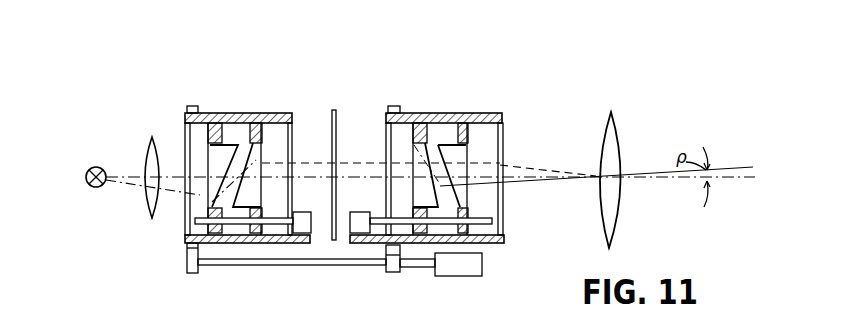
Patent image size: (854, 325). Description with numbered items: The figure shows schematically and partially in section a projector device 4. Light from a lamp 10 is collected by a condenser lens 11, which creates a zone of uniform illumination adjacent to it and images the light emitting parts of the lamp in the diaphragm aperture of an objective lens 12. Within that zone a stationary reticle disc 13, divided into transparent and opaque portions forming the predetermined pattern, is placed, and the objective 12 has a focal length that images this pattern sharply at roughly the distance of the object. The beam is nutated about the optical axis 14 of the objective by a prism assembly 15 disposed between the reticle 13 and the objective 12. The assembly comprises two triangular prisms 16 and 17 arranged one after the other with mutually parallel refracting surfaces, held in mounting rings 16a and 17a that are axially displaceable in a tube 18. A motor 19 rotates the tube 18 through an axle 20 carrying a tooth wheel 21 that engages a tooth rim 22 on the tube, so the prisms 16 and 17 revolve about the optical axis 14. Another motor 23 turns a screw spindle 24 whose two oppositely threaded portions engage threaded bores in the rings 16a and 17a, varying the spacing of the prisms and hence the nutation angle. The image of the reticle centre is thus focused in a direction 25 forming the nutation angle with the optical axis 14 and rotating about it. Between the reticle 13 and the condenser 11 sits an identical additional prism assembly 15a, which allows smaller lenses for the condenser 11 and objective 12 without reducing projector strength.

The projector device 4 is at (132, 119).
The lamp 10 is at (92, 187).
The condenser lens 11 is at (148, 205).
The objective lens 12 is at (614, 222).
The stationary reticle disc 13 is at (335, 108).
The optical axis 14 is at (717, 181).
The prism assembly 15 is at (501, 132).
The additional prism assembly 15a is at (277, 135).
The triangular prism 16 is at (420, 193).
The mounting ring 16a is at (420, 124).
The triangular prism 17 is at (458, 157).
The mounting ring 17a is at (468, 124).
The tube 18 is at (505, 240).
The motor 19 is at (463, 268).
The axle 20 is at (425, 268).
The tooth wheel 21 is at (392, 272).
The tooth rim 22 is at (387, 248).
The motor 23 is at (349, 232).
The screw spindle 24 is at (482, 217).
The direction 25 is at (715, 168).